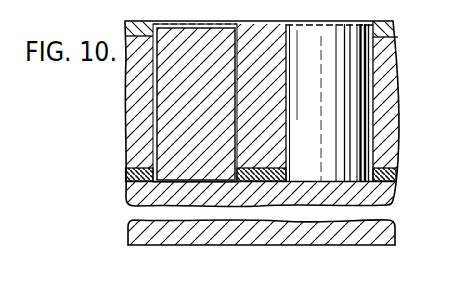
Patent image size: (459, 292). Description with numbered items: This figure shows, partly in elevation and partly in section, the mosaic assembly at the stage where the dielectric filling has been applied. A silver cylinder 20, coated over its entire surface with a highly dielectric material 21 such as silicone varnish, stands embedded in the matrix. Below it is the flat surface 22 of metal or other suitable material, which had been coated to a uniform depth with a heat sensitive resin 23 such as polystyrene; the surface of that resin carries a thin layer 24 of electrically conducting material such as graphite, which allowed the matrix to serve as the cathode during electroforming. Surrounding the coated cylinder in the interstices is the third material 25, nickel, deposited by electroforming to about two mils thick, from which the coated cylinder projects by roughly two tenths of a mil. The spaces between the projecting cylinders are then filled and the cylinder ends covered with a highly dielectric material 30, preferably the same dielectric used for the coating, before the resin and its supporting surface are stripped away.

The cylinders 20 is at (196, 38).
The highly dielectric material 21 is at (239, 40).
The flat surface 22 is at (208, 238).
The heat sensitive resin 23 is at (383, 170).
The thin layer of electrically conducting material 24 is at (136, 173).
The third material 25 is at (265, 50).
The highly dielectric material 30 is at (283, 25).